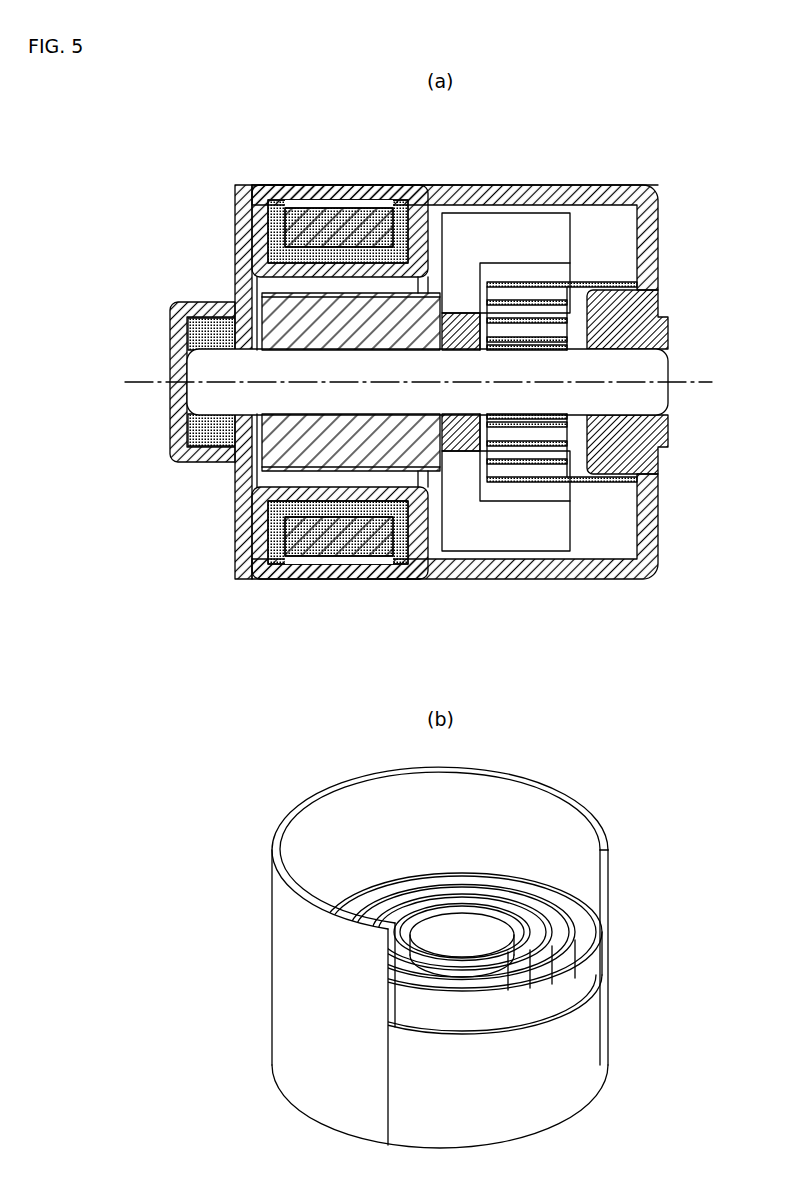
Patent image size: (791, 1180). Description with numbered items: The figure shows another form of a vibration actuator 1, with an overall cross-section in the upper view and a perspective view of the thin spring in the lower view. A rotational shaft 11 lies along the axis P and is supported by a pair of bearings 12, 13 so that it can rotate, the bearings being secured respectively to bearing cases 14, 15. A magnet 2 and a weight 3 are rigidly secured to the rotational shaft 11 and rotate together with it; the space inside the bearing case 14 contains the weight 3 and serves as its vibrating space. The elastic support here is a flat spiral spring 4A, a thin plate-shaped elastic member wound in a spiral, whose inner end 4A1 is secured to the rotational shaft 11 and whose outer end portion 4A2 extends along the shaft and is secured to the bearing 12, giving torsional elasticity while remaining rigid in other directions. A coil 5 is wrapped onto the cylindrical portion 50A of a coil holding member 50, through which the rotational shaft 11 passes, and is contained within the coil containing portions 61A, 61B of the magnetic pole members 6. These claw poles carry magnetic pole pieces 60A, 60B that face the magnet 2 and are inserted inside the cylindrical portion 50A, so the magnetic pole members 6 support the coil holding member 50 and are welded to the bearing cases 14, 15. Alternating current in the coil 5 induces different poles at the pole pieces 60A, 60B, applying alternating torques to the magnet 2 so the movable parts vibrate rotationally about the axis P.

The vibration actuator 1 is at (685, 156).
The magnet 2 is at (365, 292).
The weight 3 is at (530, 213).
The flat spiral spring 4A is at (557, 283).
The inner end 4A1 is at (485, 962).
The outer end portion 4A2 is at (580, 834).
The coil 5 is at (318, 208).
The magnetic pole members 6 is at (234, 215).
The rotational shaft 11 is at (668, 360).
The bearing 12 is at (668, 318).
The bearing 13 is at (178, 303).
The bearing case 14 is at (660, 228).
The bearing case 15 is at (233, 260).
The coil holding member 50 is at (272, 200).
The cylindrical portion 50A is at (362, 225).
The magnetic pole piece 60A is at (256, 494).
The magnetic pole piece 60B is at (434, 262).
The coil containing portion 61A is at (402, 578).
The coil containing portion 61B is at (287, 185).
The rotational shaft P is at (704, 386).